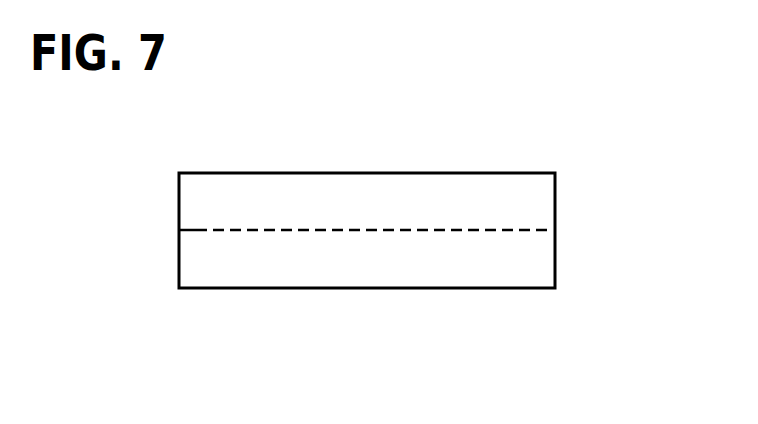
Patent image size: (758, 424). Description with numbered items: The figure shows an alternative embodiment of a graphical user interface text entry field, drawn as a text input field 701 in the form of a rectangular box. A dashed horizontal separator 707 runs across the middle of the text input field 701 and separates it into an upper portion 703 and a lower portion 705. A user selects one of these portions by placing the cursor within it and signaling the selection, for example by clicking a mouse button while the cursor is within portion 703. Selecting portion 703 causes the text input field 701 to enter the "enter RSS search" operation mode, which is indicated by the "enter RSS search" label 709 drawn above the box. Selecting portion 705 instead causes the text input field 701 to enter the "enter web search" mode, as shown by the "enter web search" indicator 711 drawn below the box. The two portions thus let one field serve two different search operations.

The text input field 701 is at (598, 233).
The portion 703 is at (541, 203).
The portion 705 is at (537, 268).
The horizontal separator 707 is at (195, 230).
The enter RSS search label 709 is at (503, 140).
The indicator 711 is at (233, 328).